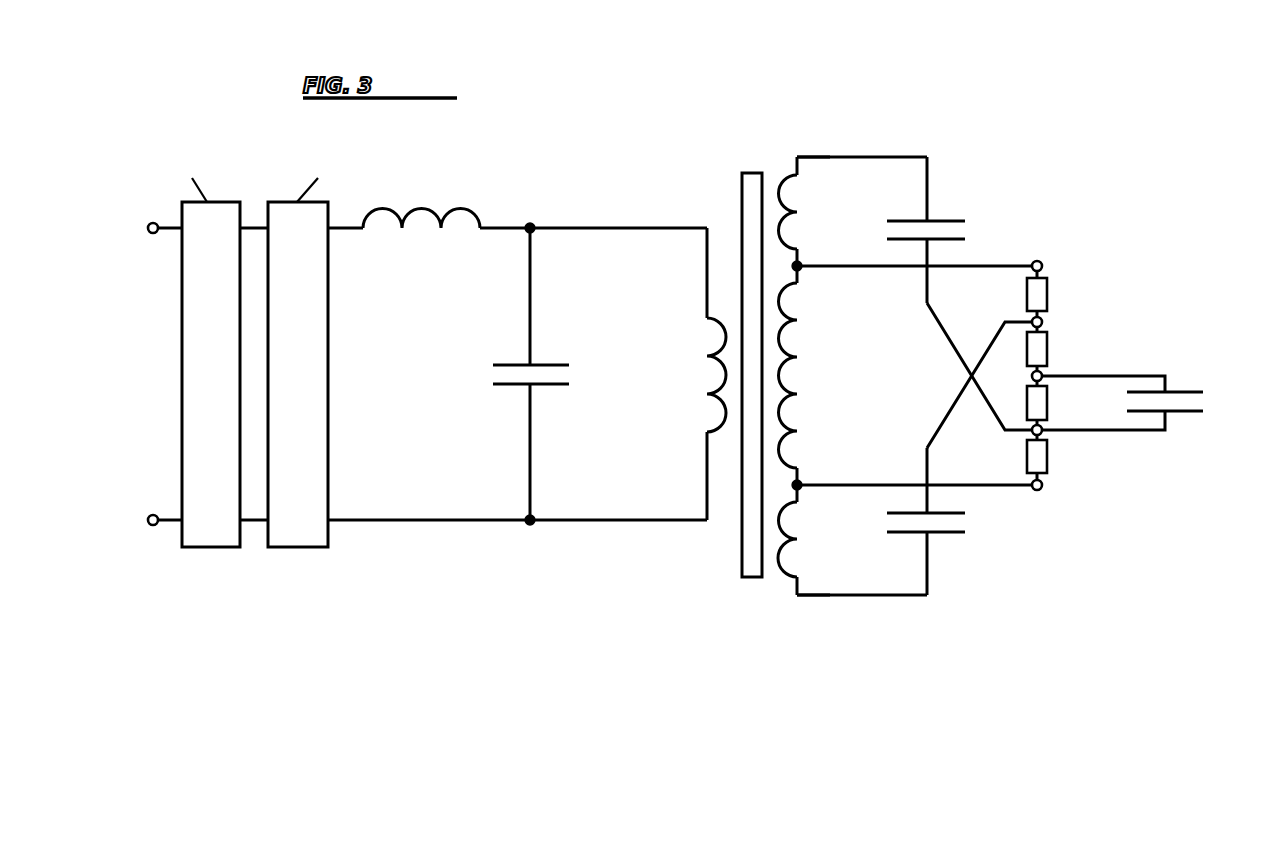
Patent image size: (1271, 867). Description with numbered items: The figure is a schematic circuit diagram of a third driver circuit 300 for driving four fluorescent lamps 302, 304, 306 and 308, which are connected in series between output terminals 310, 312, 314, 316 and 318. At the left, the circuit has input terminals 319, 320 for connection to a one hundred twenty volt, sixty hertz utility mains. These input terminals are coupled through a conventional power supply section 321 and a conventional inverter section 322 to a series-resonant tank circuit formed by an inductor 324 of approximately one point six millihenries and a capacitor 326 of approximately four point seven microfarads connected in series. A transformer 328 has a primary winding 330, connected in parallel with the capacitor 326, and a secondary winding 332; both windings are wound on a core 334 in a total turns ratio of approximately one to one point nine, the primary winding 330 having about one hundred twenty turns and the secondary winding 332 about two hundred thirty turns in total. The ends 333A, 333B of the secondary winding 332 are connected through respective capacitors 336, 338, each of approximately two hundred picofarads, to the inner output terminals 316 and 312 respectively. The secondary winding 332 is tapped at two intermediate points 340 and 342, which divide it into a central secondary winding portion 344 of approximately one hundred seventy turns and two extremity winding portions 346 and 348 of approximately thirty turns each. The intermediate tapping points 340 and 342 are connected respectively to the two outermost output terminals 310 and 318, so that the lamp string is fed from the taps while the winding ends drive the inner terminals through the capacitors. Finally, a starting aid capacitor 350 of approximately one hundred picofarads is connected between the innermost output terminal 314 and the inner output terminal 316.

The third driver circuit 300 is at (343, 654).
The fluorescent lamp 302 is at (1047, 302).
The fluorescent lamp 304 is at (1047, 352).
The fluorescent lamp 306 is at (1047, 400).
The fluorescent lamp 308 is at (1047, 450).
The output terminal 310 is at (1043, 265).
The output terminal 312 is at (1043, 320).
The output terminal 314 is at (1043, 374).
The output terminal 316 is at (1043, 432).
The output terminal 318 is at (1043, 487).
The input terminal 319 is at (150, 235).
The input terminal 320 is at (148, 513).
The power supply section 321 is at (231, 379).
The inverter section 322 is at (318, 379).
The inductor 324 is at (402, 227).
The capacitor 326 is at (512, 386).
The transformer 328 is at (753, 612).
The primary winding 330 is at (710, 357).
The secondary winding 332 is at (788, 110).
The end of secondary winding 333A is at (797, 157).
The end of secondary winding 333B is at (798, 597).
The core 334 is at (752, 173).
The capacitor 336 is at (950, 217).
The capacitor 338 is at (950, 533).
The intermediate tapping point 340 is at (800, 270).
The intermediate tapping point 342 is at (798, 483).
The central secondary winding portion 344 is at (795, 393).
The extremity winding portion 346 is at (795, 212).
The extremity winding portion 348 is at (798, 540).
The starting aid capacitor 350 is at (1195, 390).